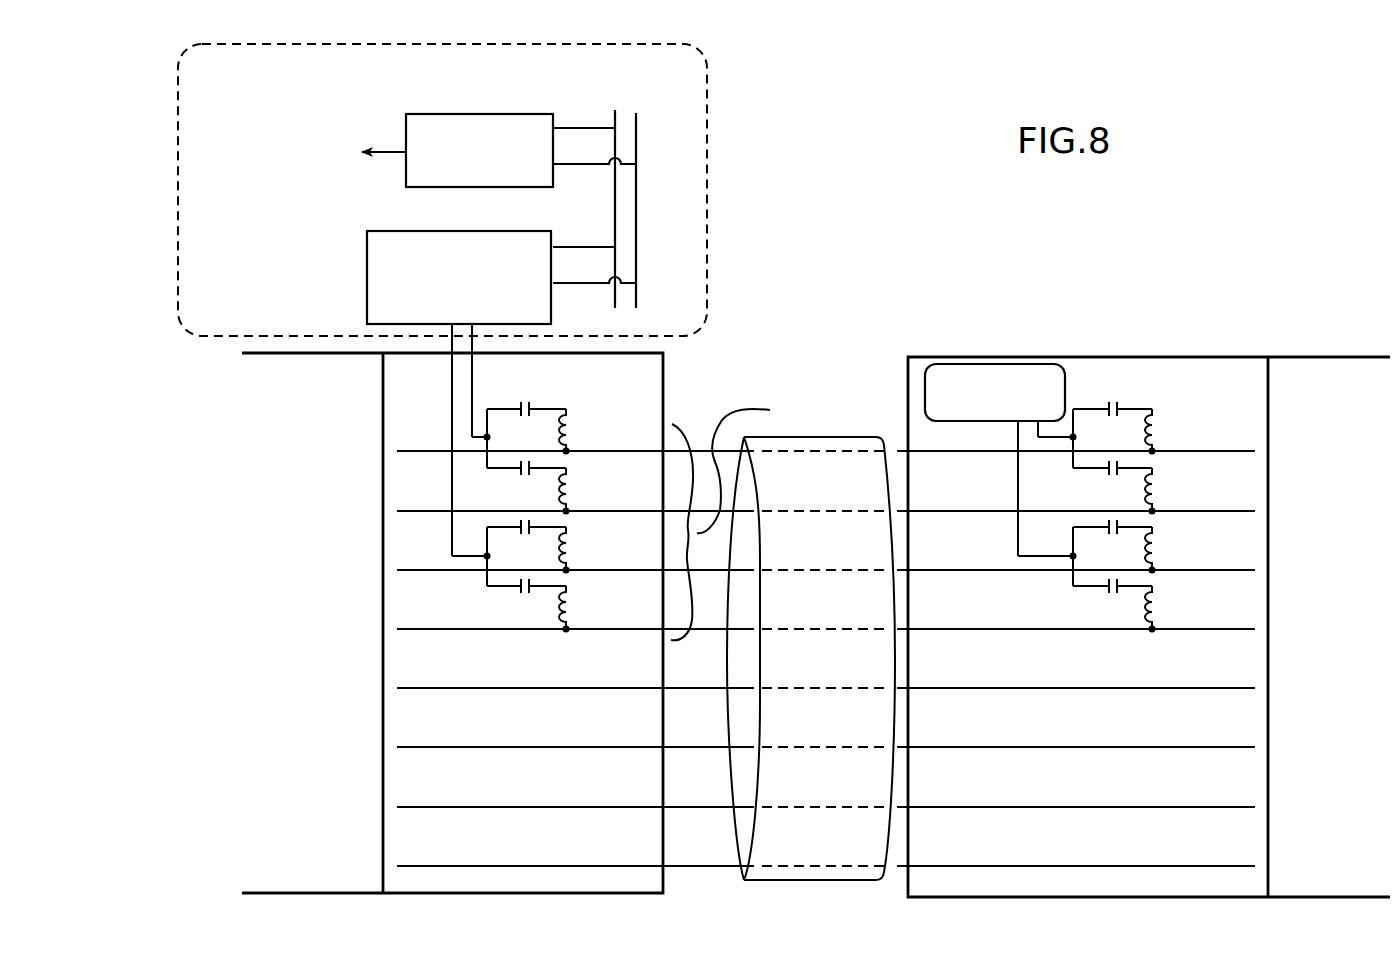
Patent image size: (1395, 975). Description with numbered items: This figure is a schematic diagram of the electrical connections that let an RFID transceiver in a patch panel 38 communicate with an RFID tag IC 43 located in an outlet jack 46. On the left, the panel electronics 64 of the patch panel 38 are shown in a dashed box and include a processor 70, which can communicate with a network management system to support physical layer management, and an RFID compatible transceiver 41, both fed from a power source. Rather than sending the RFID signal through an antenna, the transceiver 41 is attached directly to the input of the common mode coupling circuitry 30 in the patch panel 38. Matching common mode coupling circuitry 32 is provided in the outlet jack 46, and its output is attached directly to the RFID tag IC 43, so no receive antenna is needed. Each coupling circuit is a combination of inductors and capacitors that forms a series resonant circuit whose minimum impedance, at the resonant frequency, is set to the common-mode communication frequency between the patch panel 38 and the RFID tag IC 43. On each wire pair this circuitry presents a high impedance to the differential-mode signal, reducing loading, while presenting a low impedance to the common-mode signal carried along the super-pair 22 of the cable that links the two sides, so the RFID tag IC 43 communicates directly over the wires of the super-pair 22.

The super-pair 22 is at (783, 638).
The common mode coupling circuitry 30 is at (608, 405).
The common mode coupling circuitry 32 is at (1201, 390).
The patch panel 38 is at (714, 352).
The transceiver 41 is at (367, 280).
The RFID tag IC 43 is at (1065, 384).
The outlet jack 46 is at (1072, 338).
The panel electronics 64 is at (707, 96).
The processor 70 is at (546, 113).